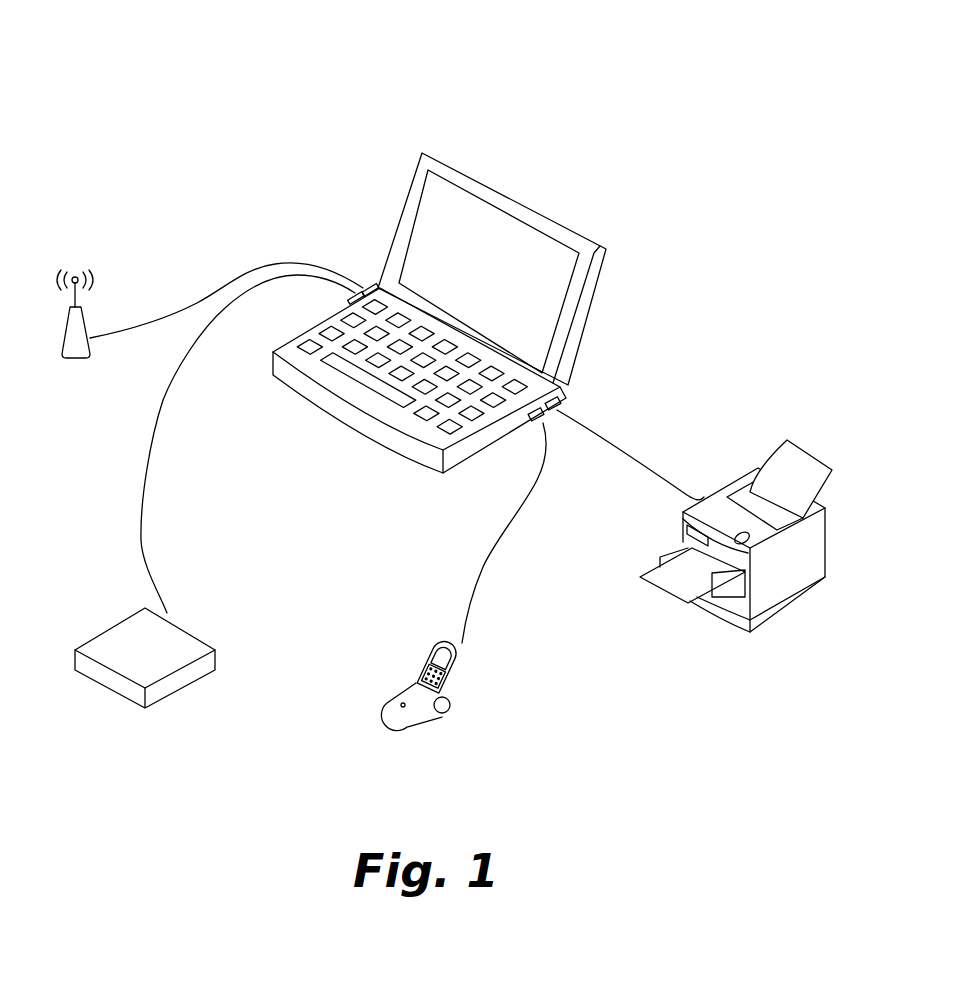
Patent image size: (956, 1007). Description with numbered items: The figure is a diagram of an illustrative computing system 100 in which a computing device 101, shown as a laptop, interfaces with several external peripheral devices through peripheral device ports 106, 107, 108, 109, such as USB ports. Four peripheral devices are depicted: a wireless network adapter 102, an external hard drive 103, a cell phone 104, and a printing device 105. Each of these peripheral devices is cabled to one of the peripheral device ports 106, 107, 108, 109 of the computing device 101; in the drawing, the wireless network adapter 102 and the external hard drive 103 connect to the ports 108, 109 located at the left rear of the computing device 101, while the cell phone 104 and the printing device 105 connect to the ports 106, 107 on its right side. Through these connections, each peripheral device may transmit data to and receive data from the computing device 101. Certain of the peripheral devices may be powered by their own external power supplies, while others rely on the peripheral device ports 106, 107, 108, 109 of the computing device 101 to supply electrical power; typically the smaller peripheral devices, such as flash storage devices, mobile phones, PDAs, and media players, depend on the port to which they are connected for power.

The computing system 100 is at (288, 80).
The computing device 101 is at (503, 280).
The wireless network adapter 102 is at (68, 362).
The external hard drive 103 is at (158, 658).
The cell phone 104 is at (452, 700).
The printing device 105 is at (806, 580).
The peripheral device port 106 is at (520, 429).
The peripheral device port 107 is at (571, 394).
The peripheral device port 108 is at (339, 305).
The peripheral device port 109 is at (373, 280).